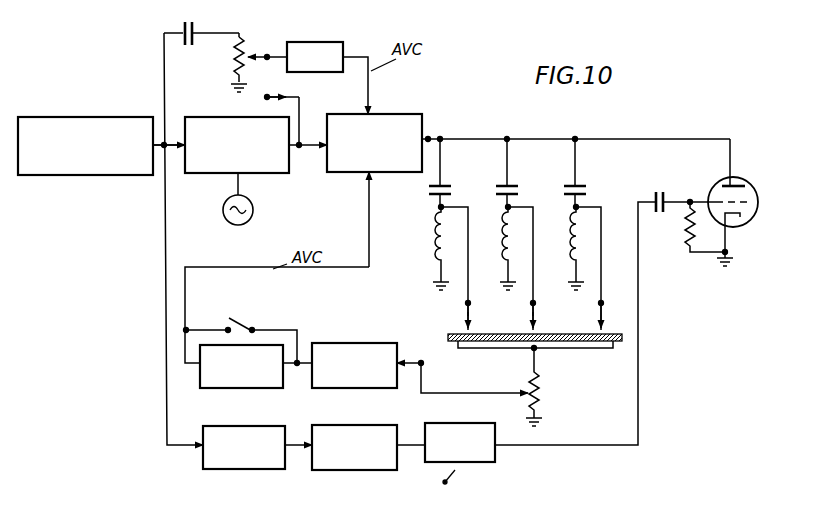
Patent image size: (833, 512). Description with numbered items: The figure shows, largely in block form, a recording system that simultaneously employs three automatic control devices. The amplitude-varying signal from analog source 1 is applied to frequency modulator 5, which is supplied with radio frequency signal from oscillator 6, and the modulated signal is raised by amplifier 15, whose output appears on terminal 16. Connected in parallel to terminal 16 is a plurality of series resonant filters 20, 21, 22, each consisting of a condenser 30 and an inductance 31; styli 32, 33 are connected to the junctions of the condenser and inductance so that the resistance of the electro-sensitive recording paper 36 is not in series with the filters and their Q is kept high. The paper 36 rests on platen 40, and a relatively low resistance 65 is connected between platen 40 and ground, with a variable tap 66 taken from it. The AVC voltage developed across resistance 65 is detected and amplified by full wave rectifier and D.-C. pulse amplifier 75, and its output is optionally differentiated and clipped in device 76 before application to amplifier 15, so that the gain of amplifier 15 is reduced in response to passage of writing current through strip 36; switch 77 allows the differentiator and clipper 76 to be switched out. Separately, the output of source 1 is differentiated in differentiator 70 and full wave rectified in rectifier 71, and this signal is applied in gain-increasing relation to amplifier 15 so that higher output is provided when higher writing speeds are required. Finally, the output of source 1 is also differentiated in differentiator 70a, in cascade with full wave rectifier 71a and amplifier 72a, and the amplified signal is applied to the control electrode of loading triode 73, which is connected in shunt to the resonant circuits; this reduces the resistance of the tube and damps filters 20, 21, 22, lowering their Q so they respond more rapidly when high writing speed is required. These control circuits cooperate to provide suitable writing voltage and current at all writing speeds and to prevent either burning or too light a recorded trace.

The analog source 1 is at (123, 171).
The frequency modulator 5 is at (211, 119).
The oscillator 6 is at (253, 216).
The amplifier 15 is at (395, 115).
The terminal 16 is at (434, 136).
The series resonant filter 20 is at (427, 268).
The series resonant filter 21 is at (498, 223).
The series resonant filter 22 is at (565, 217).
The condenser 30 is at (430, 188).
The inductance 31 is at (437, 246).
The stylus 32 is at (472, 316).
The stylus 33 is at (535, 313).
The electro-sensitive recording paper 36 is at (551, 336).
The platen 40 is at (578, 347).
The resistance 65 is at (542, 394).
The variable tap 66 is at (474, 390).
The differentiator 70 is at (220, 43).
The full wave rectifier 71 is at (322, 44).
The loading triode 73 is at (745, 219).
The full wave rectifier and D.-C. pulse amplifier 75 is at (330, 344).
The differentiator and clipper 76 is at (222, 389).
The switch 77 is at (244, 318).
The differentiator 70a is at (231, 462).
The full wave rectifier 71a is at (340, 460).
The amplifier 72a is at (477, 400).